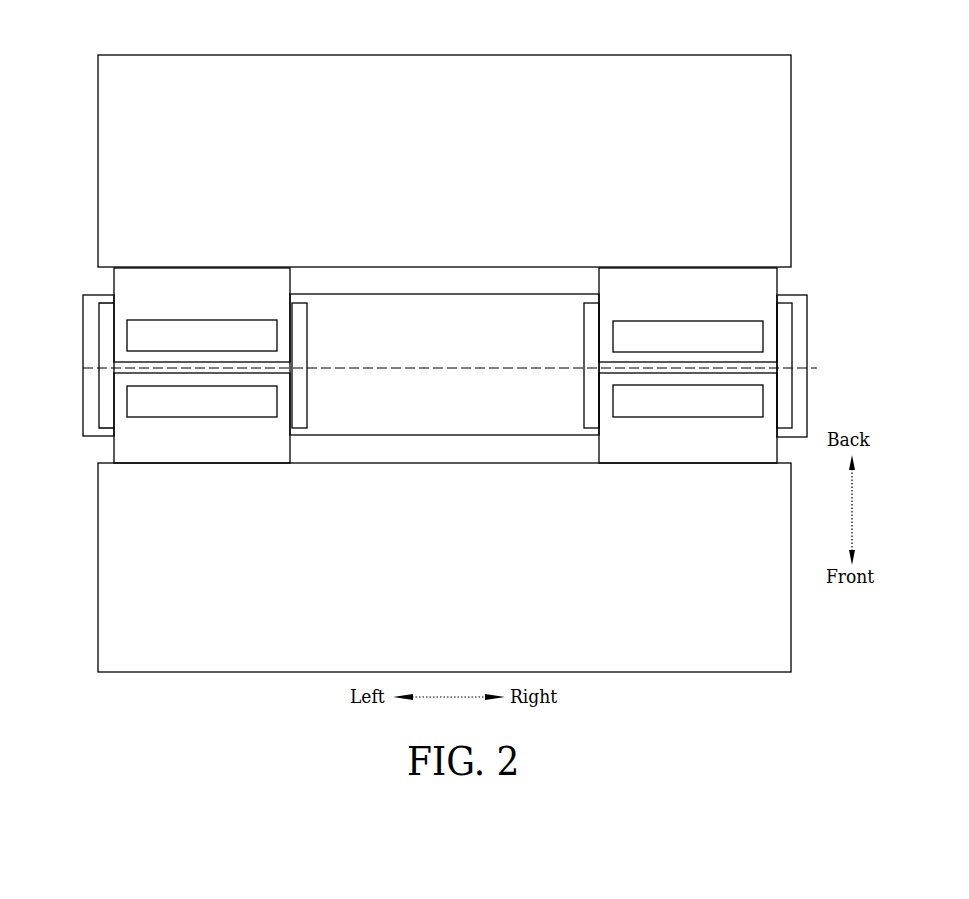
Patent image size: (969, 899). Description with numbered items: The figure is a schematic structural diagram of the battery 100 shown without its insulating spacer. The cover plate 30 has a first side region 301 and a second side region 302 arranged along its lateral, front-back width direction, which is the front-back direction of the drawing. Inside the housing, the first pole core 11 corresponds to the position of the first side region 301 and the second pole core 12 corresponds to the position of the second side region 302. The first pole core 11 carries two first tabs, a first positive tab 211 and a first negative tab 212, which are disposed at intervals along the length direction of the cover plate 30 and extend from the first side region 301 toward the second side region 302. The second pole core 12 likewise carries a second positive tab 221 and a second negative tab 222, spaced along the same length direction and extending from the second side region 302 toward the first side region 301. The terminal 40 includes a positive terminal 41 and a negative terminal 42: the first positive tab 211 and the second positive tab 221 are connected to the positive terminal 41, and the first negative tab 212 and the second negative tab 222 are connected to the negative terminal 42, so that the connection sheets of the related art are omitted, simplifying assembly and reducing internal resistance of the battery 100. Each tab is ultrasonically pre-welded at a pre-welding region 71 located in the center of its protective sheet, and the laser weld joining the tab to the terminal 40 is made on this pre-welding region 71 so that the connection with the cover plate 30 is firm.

The battery 100 is at (440, 42).
The first pole core 11 is at (107, 183).
The second pole core 12 is at (126, 548).
The first positive tab 211 is at (120, 355).
The second positive tab 221 is at (127, 380).
The first negative tab 212 is at (768, 353).
The second negative tab 222 is at (772, 387).
The pre-welding region 71 is at (153, 328).
The cover plate 30 is at (92, 315).
The first side region 301 is at (92, 333).
The second side region 302 is at (92, 403).
The terminal 40 is at (872, 235).
The positive terminal 41 is at (300, 321).
The negative terminal 42 is at (784, 314).